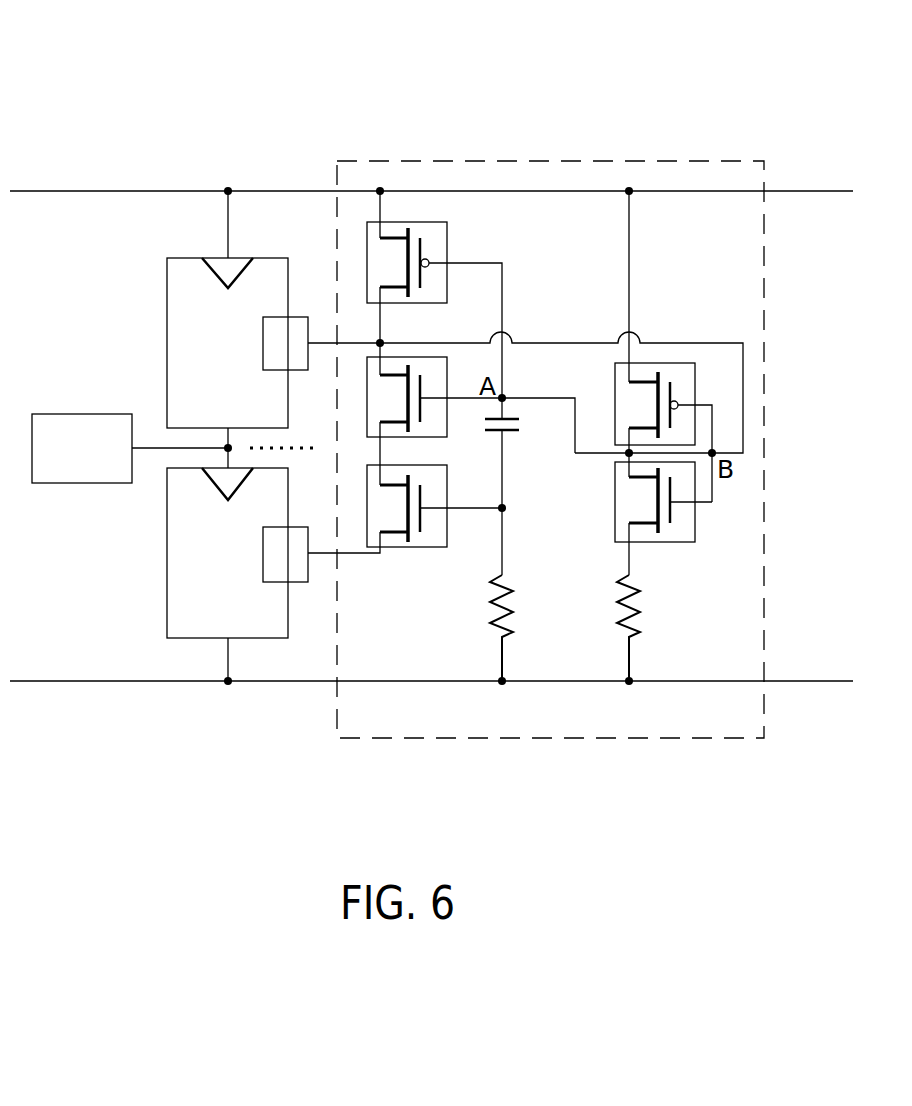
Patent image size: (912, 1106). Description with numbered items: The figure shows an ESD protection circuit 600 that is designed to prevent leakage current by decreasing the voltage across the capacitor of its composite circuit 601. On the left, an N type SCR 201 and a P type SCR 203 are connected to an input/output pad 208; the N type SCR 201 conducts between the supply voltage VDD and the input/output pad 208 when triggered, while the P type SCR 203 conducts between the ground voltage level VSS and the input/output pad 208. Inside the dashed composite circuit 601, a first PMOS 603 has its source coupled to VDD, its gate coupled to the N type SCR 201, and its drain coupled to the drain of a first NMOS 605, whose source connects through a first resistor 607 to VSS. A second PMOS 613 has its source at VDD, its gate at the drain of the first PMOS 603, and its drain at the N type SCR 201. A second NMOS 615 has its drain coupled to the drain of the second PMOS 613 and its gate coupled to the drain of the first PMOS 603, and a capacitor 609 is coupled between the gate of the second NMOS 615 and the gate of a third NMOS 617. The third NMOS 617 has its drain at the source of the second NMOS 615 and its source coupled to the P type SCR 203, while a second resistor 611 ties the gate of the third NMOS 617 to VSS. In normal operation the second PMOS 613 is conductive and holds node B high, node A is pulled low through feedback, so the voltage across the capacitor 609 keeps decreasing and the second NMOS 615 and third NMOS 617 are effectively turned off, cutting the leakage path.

The ESD protection circuit 600 is at (667, 90).
The composite circuit 601 is at (764, 512).
The N type SCR 201 is at (167, 308).
The P type SCR 203 is at (167, 603).
The input/output pad 208 is at (82, 483).
The first PMOS 603 is at (615, 376).
The first NMOS 605 is at (615, 530).
The first resistor 607 is at (642, 618).
The capacitor 609 is at (510, 432).
The second resistor 611 is at (515, 618).
The second PMOS 613 is at (447, 245).
The second NMOS 615 is at (447, 422).
The third NMOS 617 is at (403, 547).